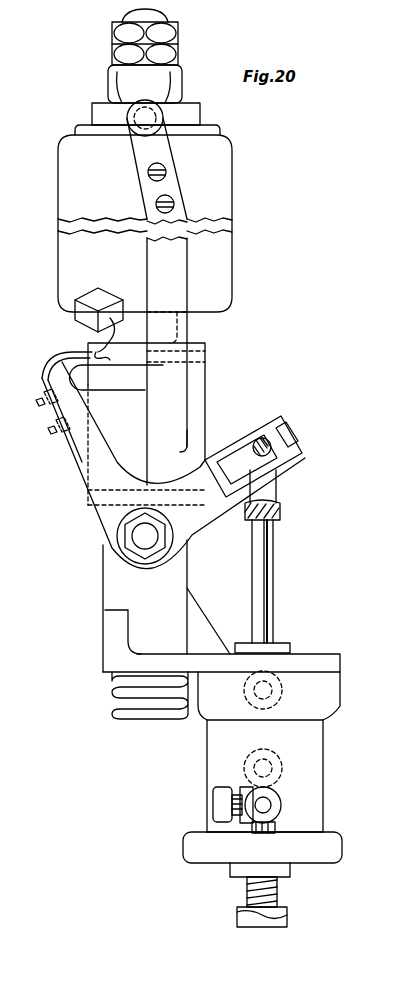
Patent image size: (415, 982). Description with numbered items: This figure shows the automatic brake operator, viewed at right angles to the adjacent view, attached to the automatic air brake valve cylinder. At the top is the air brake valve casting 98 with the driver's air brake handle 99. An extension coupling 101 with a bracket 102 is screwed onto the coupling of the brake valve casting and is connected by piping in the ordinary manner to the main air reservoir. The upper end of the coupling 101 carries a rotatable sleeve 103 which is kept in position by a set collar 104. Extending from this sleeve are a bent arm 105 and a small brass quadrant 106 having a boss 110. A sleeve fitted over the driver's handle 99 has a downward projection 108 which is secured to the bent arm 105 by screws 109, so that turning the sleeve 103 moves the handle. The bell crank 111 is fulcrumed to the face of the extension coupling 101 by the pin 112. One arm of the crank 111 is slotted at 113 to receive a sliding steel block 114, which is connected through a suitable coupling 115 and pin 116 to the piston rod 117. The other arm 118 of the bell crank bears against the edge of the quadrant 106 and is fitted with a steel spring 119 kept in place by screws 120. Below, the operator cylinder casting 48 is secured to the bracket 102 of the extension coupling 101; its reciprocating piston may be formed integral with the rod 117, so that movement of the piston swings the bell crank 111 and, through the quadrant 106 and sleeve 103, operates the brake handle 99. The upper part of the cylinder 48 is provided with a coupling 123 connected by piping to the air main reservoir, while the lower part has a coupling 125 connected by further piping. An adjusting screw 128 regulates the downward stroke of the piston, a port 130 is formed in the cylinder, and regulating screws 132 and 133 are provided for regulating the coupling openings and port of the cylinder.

The operator cylinder casting 48 is at (325, 722).
The air brake valve casting 98 is at (145, 160).
The driver's air brake handle 99 is at (140, 116).
The extension coupling 101 is at (160, 603).
The bracket 102 is at (103, 653).
The rotatable sleeve 103 is at (146, 424).
The set collar 104 is at (208, 350).
The bent arm 105 is at (157, 386).
The brass quadrant 106 is at (117, 377).
The downward projection 108 is at (137, 174).
The screws 109 is at (167, 174).
The boss 110 is at (92, 348).
The bell crank 111 is at (147, 459).
The pin 112 is at (146, 546).
The slot 113 is at (238, 462).
The sliding steel block 114 is at (284, 436).
The coupling 115 is at (281, 492).
The pin 116 is at (262, 440).
The piston rod 117 is at (275, 550).
The arm of bell crank 118 is at (80, 470).
The steel spring 119 is at (78, 372).
The screws 120 is at (52, 430).
The coupling 123 is at (268, 690).
The coupling 125 is at (268, 805).
The adjusting screw 128 is at (278, 894).
The port 130 is at (323, 830).
The regulating screw 132 is at (216, 797).
The regulating screw 133 is at (266, 768).